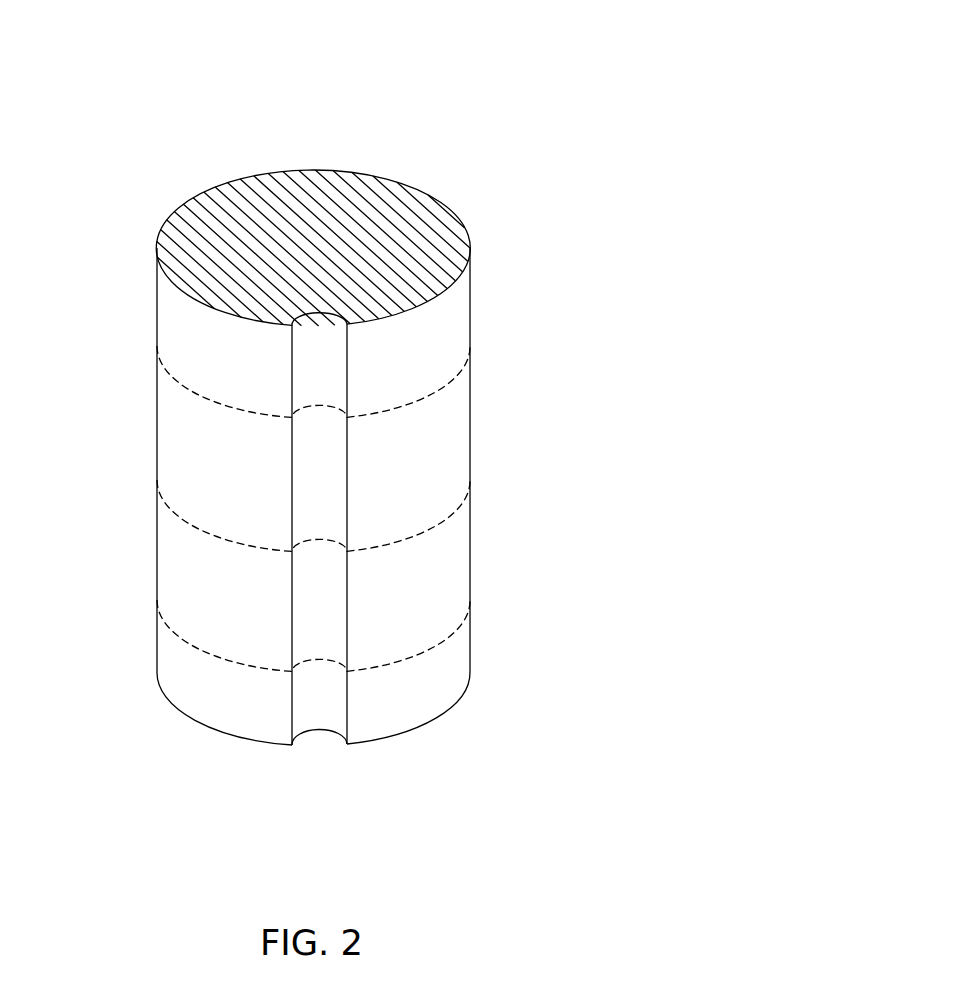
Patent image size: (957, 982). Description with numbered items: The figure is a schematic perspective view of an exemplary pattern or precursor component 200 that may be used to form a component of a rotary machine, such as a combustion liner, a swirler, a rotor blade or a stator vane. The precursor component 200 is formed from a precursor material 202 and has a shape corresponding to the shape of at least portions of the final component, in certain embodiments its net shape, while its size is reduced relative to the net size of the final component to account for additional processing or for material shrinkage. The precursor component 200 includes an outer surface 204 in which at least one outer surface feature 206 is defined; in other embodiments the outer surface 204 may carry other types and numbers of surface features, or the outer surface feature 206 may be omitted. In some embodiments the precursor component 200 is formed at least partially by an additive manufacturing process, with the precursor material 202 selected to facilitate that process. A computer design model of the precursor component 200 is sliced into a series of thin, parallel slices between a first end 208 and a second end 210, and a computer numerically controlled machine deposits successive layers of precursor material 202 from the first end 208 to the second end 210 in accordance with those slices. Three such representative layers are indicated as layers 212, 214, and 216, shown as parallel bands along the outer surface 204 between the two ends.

The pattern or precursor component 200 is at (482, 80).
The precursor material 202 is at (432, 244).
The outer surface 204 is at (447, 418).
The outer surface feature 206 is at (320, 731).
The first end 208 is at (197, 742).
The second end 210 is at (196, 180).
The layer 212 is at (186, 643).
The layer 214 is at (186, 524).
The layer 216 is at (186, 391).